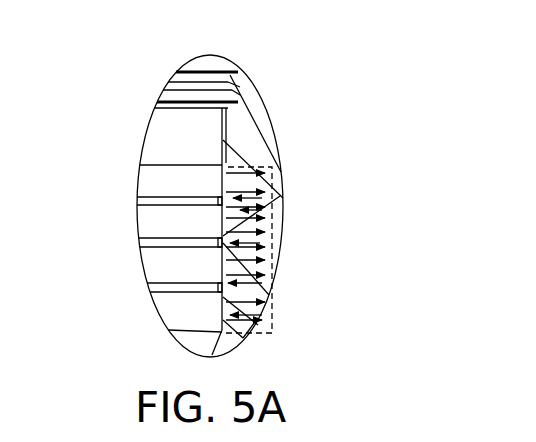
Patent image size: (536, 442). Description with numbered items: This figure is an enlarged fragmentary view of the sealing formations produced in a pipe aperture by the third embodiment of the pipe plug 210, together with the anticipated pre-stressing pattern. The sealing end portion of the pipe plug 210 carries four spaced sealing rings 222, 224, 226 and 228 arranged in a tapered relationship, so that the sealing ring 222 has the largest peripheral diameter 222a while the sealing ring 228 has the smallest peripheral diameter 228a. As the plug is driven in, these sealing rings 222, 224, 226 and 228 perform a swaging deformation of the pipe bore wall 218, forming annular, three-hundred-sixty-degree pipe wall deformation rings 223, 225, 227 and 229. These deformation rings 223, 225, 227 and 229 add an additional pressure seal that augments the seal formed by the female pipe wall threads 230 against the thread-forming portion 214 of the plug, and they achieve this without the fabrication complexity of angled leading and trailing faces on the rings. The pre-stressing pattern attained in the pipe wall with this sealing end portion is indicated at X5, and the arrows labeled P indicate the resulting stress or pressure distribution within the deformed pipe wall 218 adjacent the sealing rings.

The pipe plug 210 is at (120, 148).
The thread-forming portion 214 is at (158, 90).
The pipe bore wall 218 is at (241, 114).
The female pipe wall threads 230 is at (238, 84).
The light path P is at (264, 152).
The prestressing pattern X5 is at (279, 179).
The sealing ring 222 is at (150, 182).
The largest peripheral diameter 222a is at (268, 203).
The pipe wall deformation ring 223 is at (268, 207).
The sealing ring 224 is at (157, 223).
The pipe wall deformation ring 225 is at (268, 245).
The sealing ring 226 is at (163, 268).
The pipe wall deformation ring 227 is at (268, 284).
The sealing ring 228 is at (180, 313).
The smallest peripheral diameter 228a is at (264, 315).
The pipe wall deformation ring 229 is at (226, 340).